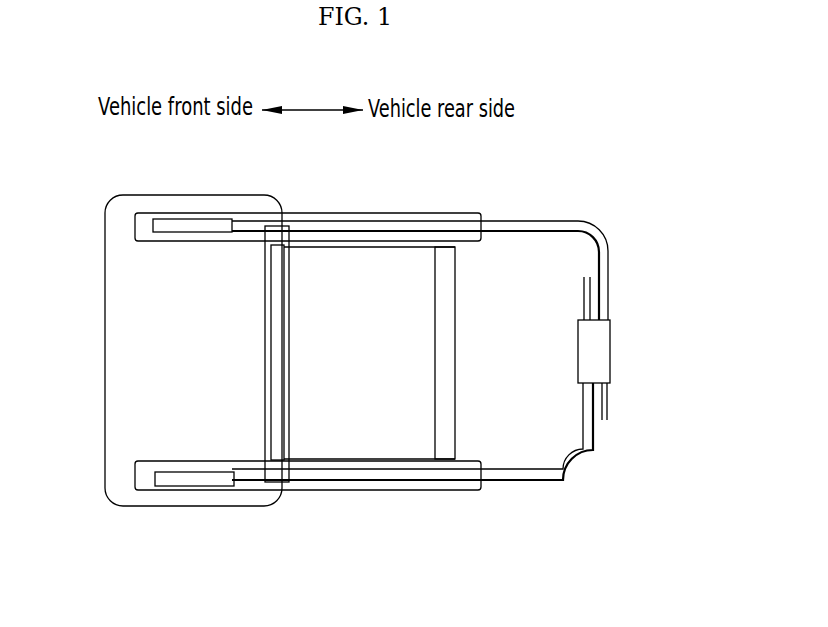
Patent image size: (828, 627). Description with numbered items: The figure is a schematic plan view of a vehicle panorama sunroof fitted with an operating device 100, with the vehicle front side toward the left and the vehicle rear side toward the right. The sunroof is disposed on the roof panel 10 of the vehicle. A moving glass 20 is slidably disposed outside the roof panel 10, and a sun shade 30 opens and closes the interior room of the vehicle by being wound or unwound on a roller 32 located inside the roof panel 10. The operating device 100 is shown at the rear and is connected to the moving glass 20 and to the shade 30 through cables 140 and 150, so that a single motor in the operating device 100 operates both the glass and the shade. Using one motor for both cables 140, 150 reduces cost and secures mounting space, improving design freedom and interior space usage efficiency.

The roof panel 10 is at (347, 213).
The moving glass 20 is at (113, 344).
The sun shade 30 is at (398, 248).
The roller 32 is at (452, 343).
The operating device 100 is at (633, 343).
The cable 140 is at (528, 213).
The cable 150 is at (590, 228).